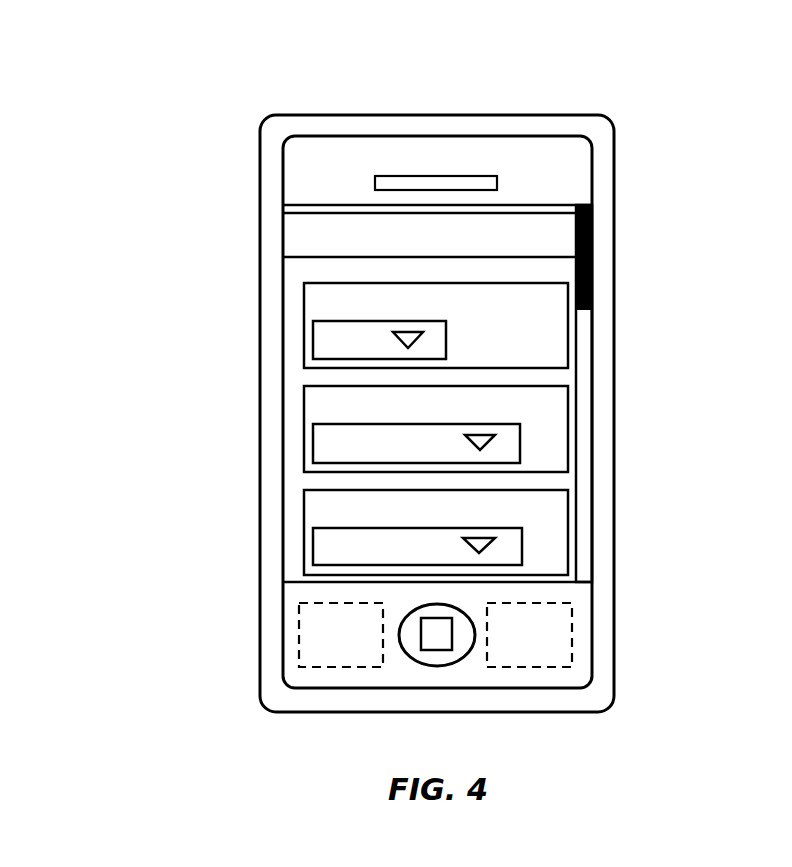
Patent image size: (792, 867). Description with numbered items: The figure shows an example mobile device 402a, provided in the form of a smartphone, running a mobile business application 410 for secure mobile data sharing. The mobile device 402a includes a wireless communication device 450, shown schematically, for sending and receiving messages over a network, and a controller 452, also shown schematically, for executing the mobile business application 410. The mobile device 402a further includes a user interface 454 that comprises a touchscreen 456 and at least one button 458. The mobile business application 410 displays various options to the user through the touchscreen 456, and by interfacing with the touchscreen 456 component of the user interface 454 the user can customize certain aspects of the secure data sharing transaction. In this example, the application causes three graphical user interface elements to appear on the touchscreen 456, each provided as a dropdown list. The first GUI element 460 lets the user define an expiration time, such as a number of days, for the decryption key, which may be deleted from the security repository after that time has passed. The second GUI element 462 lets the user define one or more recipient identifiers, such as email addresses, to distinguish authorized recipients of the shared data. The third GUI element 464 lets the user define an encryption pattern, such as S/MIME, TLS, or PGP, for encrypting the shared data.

The mobile device 402a is at (114, 71).
The mobile business application 410 is at (274, 221).
The wireless communication device 450 is at (325, 660).
The controller 452 is at (541, 658).
The user interface 454 is at (650, 477).
The touchscreen 456 is at (290, 475).
The button 458 is at (440, 658).
The first GUI element 460 is at (560, 343).
The second GUI element 462 is at (560, 433).
The third GUI element 464 is at (560, 535).